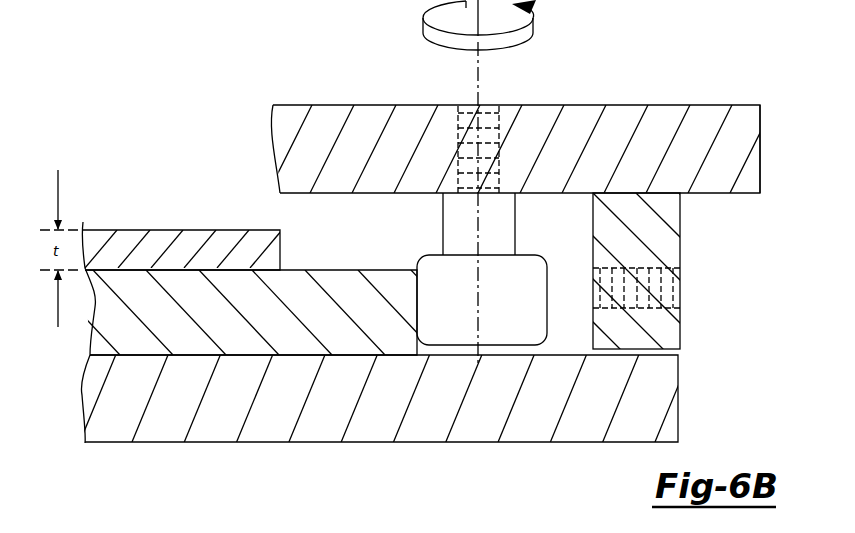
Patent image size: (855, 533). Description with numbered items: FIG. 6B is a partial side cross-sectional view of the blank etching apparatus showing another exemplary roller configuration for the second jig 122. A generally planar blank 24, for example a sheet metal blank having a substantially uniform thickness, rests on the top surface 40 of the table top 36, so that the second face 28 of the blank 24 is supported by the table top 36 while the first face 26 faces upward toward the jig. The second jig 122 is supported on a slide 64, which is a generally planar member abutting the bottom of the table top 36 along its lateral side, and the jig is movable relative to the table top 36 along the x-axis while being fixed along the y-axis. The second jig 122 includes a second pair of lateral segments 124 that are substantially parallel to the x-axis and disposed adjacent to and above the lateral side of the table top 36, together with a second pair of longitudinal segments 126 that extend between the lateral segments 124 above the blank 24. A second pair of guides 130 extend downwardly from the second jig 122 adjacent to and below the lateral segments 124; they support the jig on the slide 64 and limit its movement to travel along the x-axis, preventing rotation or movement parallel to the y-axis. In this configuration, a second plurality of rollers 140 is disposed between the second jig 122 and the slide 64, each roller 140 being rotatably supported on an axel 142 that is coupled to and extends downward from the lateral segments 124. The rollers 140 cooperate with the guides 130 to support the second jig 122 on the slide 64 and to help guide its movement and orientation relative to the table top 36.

The blank 24 is at (182, 217).
The first face 26 is at (216, 225).
The second face 28 is at (265, 287).
The table top 36 is at (385, 416).
The top surface 40 is at (346, 267).
The slides 64 is at (604, 433).
The second jig 122 is at (521, 107).
The second pair of lateral segments 124 is at (708, 118).
The second pair of longitudinal segments 126 is at (313, 117).
The second pair of guides 130 is at (676, 233).
The second plurality of rollers 140 is at (458, 345).
The axel 142 is at (505, 232).